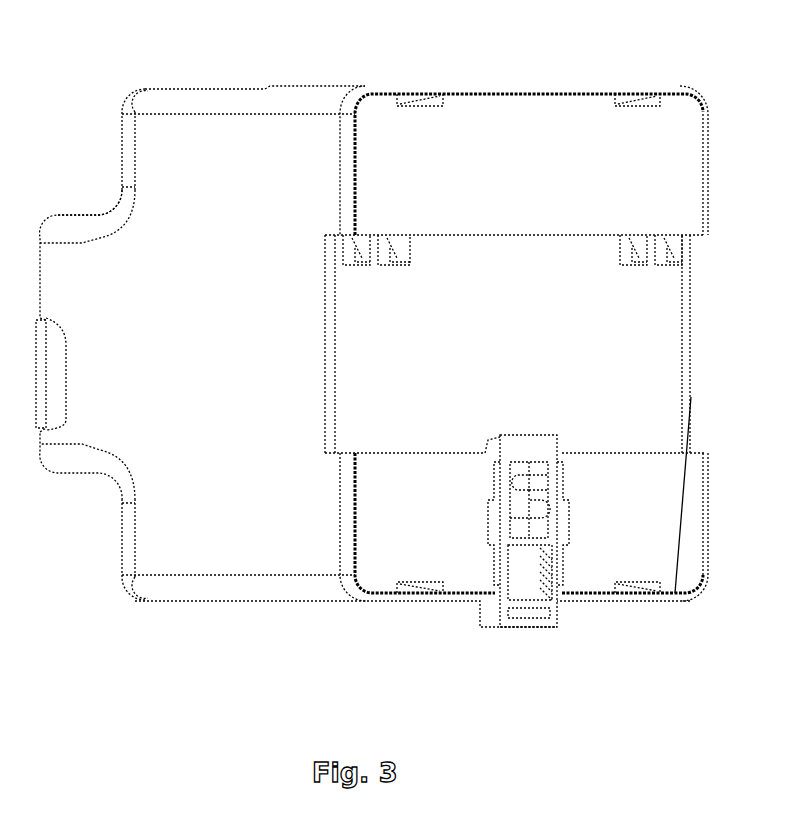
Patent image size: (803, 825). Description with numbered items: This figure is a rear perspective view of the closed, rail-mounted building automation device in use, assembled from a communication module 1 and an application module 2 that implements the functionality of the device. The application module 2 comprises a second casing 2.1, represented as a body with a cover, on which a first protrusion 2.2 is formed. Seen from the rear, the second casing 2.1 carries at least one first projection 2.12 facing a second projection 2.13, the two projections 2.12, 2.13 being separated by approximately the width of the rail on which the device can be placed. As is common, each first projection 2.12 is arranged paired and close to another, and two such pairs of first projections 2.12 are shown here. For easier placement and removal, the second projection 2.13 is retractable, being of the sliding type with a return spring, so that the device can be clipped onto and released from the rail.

The communication module 1 is at (55, 410).
The application module 2 is at (323, 609).
The second casing 2.1 is at (237, 346).
The first protrusion 2.2 is at (64, 230).
The first projection 2.12 is at (402, 248).
The second projection 2.13 is at (523, 435).